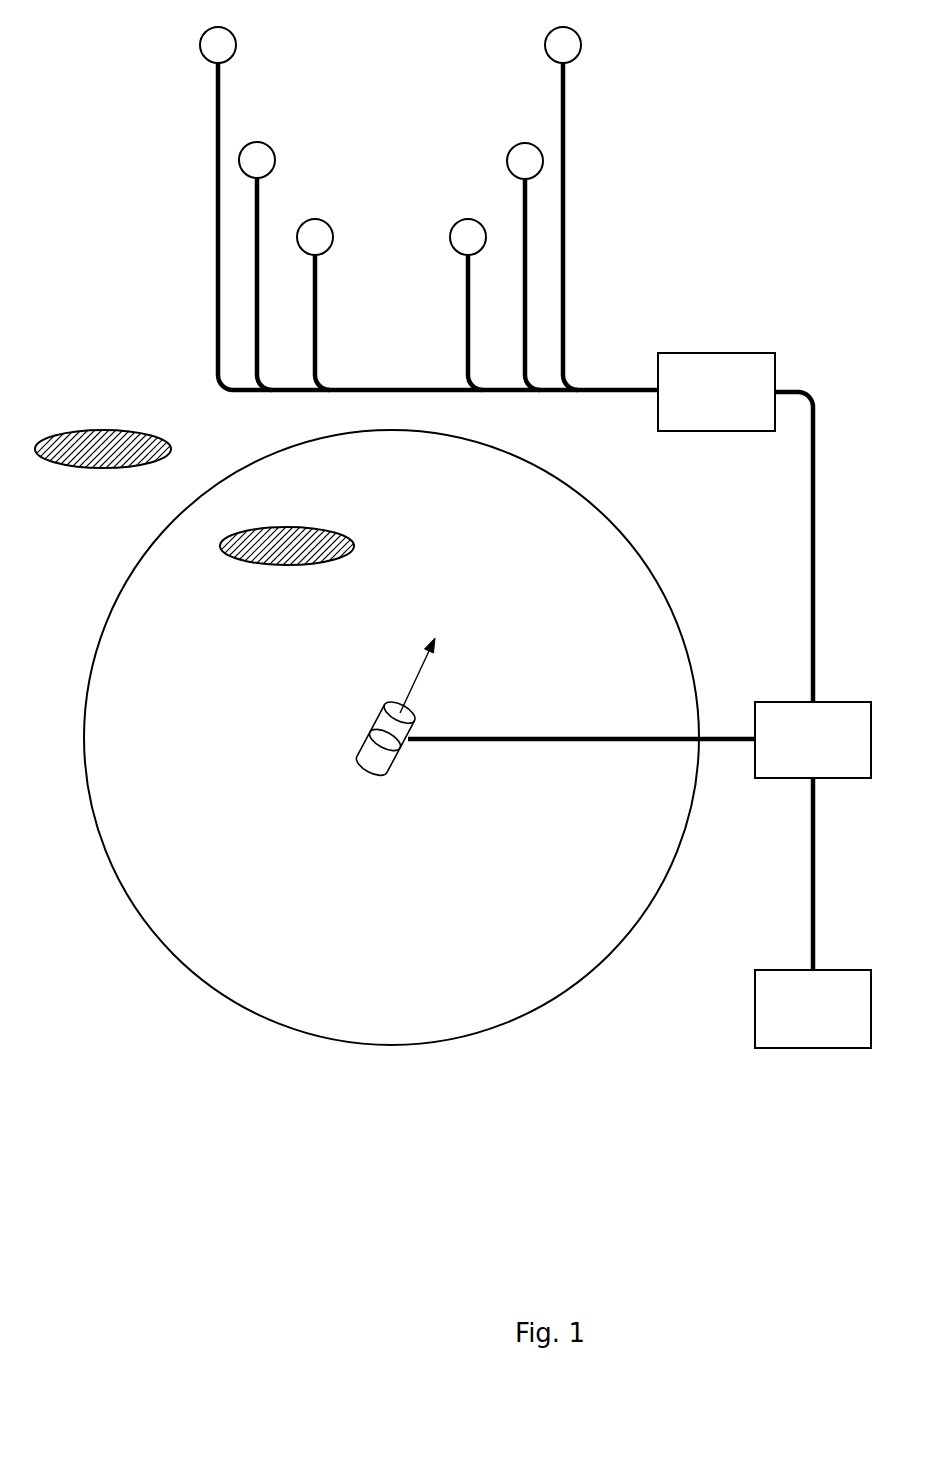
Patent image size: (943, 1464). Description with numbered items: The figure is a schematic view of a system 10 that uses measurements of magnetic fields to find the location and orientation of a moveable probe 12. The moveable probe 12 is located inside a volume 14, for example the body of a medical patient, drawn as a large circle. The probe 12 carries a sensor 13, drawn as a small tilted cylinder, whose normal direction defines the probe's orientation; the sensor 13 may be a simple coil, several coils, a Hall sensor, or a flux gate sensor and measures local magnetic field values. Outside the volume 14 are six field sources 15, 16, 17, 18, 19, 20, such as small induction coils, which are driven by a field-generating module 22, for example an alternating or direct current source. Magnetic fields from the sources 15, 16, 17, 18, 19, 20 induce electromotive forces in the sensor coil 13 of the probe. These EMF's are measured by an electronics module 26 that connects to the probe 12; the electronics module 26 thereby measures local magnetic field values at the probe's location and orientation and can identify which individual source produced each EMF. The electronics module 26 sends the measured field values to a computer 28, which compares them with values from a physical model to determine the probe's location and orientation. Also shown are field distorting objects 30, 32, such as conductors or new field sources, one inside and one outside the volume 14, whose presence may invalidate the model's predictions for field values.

The system 10 is at (78, 20).
The moveable probe 12 is at (390, 763).
The sensor 13 is at (370, 738).
The volume 14 is at (391, 737).
The field source 15 is at (450, 237).
The field source 16 is at (545, 44).
The field source 17 is at (275, 160).
The field source 18 is at (236, 44).
The field source 19 is at (333, 237).
The field source 20 is at (507, 160).
The field-generating module 22 is at (775, 372).
The electronics module 26 is at (755, 708).
The computer 28 is at (755, 985).
The field distorting object 30 is at (270, 527).
The field distorting object 32 is at (98, 430).